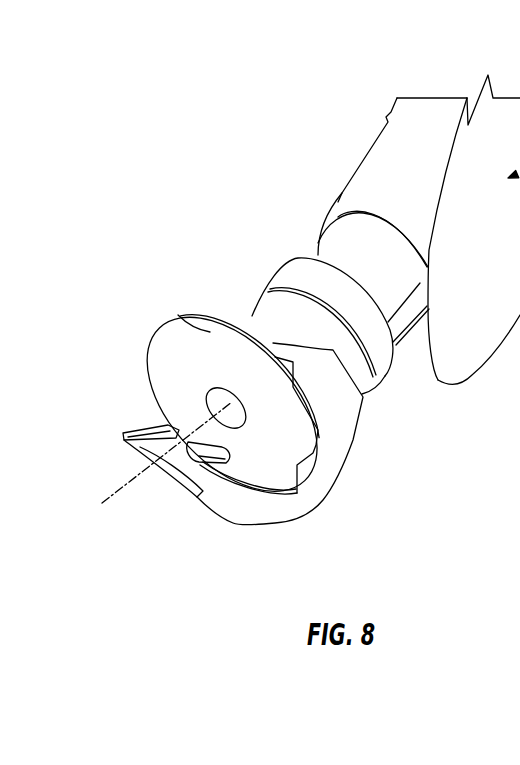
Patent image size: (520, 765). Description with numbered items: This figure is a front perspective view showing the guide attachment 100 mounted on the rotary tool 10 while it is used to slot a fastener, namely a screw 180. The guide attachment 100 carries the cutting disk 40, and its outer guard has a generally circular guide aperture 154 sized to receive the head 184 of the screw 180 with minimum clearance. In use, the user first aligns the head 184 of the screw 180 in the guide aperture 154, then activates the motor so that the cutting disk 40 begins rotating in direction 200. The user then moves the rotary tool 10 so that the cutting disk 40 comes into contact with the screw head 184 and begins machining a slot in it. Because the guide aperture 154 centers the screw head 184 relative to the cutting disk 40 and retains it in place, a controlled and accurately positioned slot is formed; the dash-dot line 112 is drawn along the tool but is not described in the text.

The rotary tool 10 is at (327, 153).
The guide attachment 100 is at (243, 243).
The cutting disk 40 is at (200, 330).
The direction 200 is at (140, 388).
The guide aperture 154 is at (182, 440).
The longitudinal axis 112 is at (140, 472).
The screw 180 is at (183, 492).
The head 184 is at (200, 463).